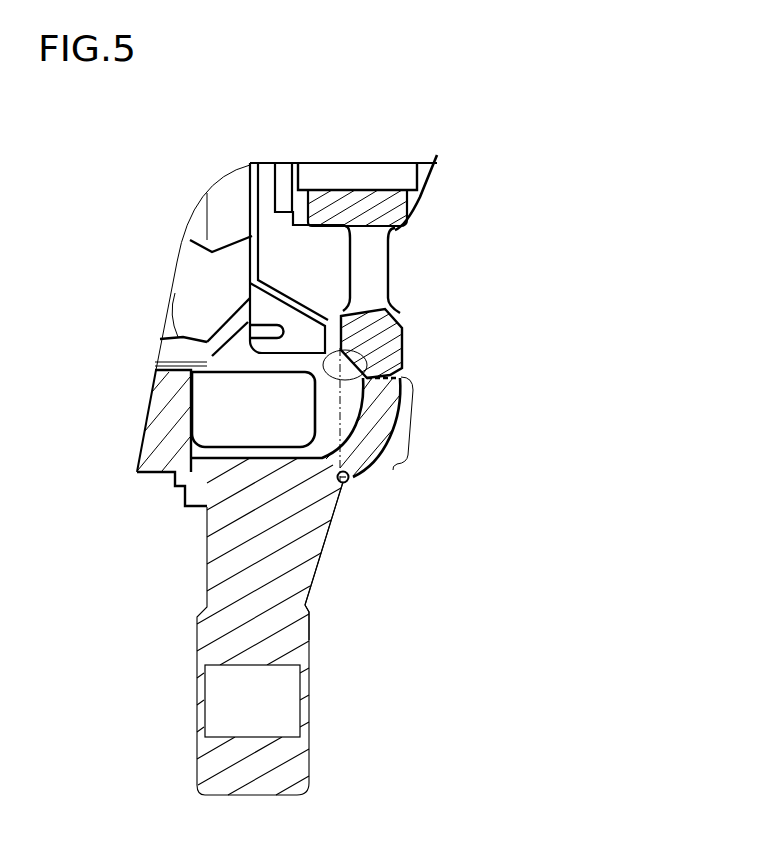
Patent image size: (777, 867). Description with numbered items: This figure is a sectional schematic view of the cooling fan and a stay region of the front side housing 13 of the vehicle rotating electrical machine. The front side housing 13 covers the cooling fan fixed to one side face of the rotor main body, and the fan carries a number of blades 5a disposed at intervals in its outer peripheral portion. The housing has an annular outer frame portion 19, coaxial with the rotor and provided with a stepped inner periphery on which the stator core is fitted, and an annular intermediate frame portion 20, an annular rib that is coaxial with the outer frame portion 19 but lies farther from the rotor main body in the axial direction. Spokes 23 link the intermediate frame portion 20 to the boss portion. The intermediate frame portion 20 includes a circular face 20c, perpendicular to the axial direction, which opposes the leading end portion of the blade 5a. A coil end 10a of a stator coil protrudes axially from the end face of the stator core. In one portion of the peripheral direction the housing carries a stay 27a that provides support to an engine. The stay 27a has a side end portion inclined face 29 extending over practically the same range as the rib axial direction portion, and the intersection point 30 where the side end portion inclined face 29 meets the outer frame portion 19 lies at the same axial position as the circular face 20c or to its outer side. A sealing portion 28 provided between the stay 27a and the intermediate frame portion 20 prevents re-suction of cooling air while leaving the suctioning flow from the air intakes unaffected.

The front side housing 13 is at (437, 153).
The spokes 23 is at (387, 248).
The intermediate frame portion 20 is at (382, 335).
The circular face 20c is at (340, 368).
The blade 5a is at (280, 323).
The outer frame portion 19 is at (177, 478).
The coil end 10a is at (244, 420).
The sealing portion 28 is at (417, 462).
The intersection point 30 is at (349, 477).
The side end portion inclined face 29 is at (323, 540).
The stay 27a is at (313, 600).